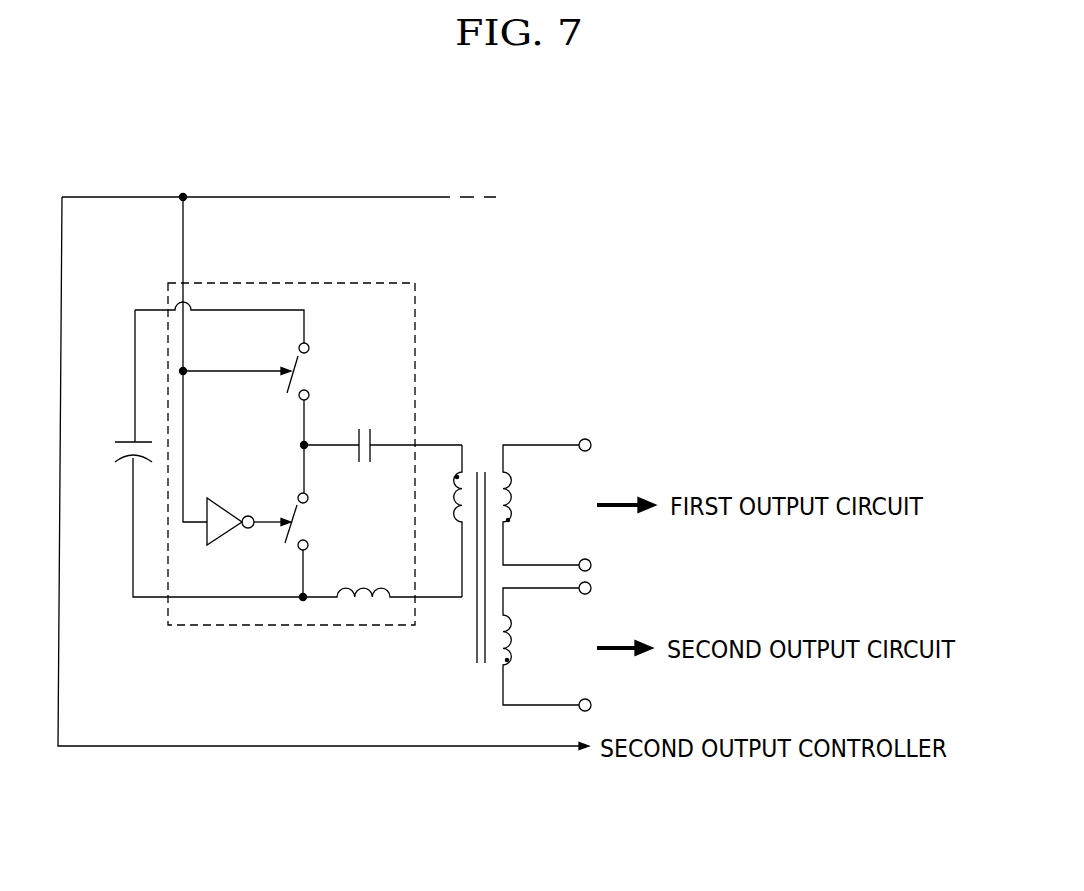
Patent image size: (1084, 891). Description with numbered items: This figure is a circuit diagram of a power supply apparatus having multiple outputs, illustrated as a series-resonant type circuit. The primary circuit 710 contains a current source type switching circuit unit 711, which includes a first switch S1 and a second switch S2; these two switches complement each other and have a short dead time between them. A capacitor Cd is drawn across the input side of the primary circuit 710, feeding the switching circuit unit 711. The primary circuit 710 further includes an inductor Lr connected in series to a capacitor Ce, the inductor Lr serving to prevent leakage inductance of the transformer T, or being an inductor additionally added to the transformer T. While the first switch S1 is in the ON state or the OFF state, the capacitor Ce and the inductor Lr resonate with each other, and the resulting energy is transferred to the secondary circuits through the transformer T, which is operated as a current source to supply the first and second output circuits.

The primary circuit 710 is at (150, 297).
The current source type switching circuit unit 711 is at (298, 492).
The DC link capacitor Cd is at (193, 453).
The first switch S1 is at (315, 371).
The second switch S2 is at (313, 521).
The capacitor Ce is at (383, 462).
The inductor Lr is at (382, 576).
The transformer T is at (522, 567).